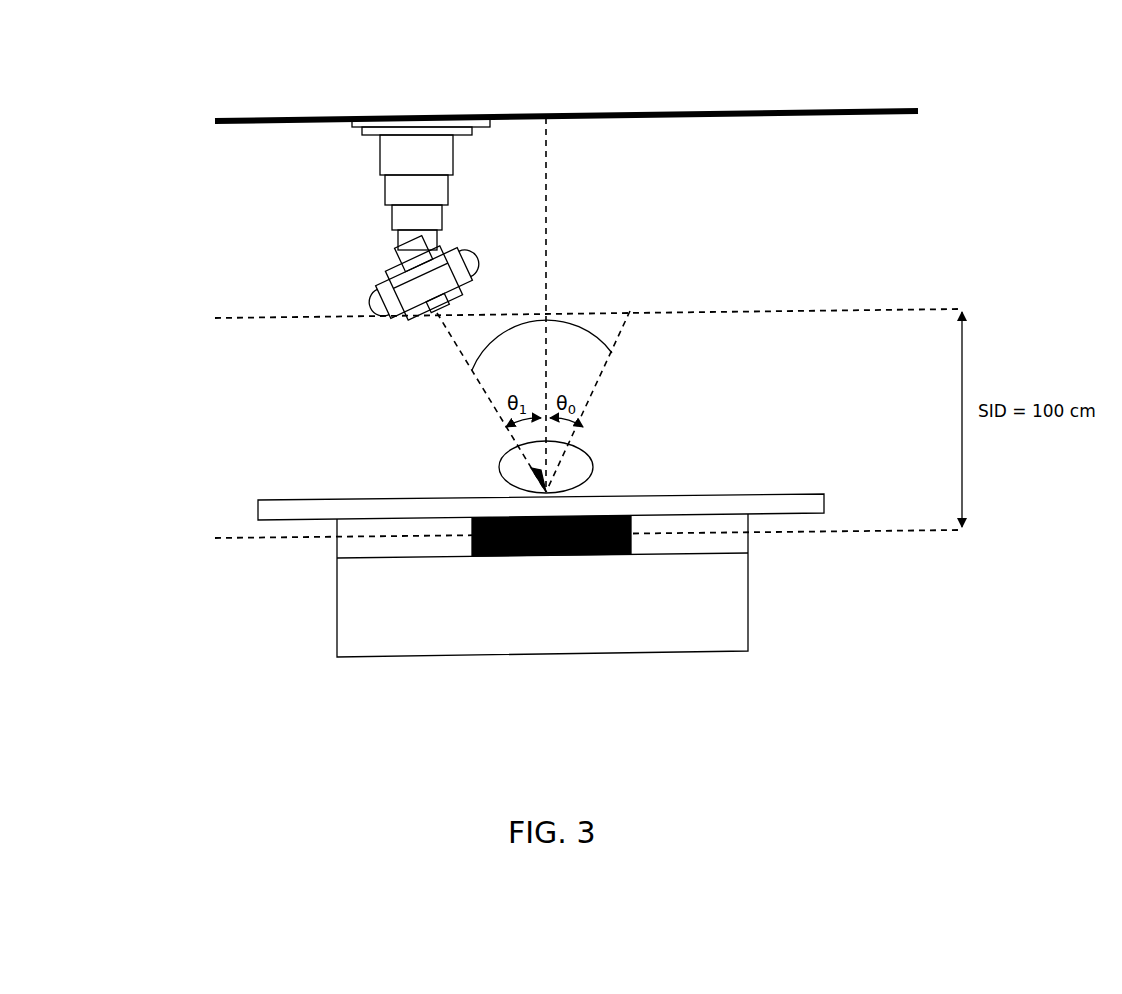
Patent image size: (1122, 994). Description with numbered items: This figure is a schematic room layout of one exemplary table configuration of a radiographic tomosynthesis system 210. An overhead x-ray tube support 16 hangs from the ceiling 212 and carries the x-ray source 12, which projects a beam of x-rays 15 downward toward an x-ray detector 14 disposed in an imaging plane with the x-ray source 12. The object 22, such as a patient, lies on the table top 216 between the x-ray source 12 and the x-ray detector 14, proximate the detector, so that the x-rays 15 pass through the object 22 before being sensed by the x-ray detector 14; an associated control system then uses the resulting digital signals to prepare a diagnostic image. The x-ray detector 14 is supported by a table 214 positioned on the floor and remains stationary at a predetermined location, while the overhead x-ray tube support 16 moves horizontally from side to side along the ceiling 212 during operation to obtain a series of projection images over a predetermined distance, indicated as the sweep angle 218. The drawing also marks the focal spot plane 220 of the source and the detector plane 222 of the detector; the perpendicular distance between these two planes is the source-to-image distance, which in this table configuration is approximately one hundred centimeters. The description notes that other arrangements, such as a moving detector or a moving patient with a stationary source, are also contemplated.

The radiographic tomosynthesis system 210 is at (684, 84).
The ceiling 212 is at (893, 108).
The overhead x-ray tube support 16 is at (382, 150).
The x-ray source 12 is at (368, 323).
The beam of x-rays 15 is at (447, 340).
The sweep angle 218 is at (587, 331).
The object 22 is at (592, 461).
The focal spot plane 220 is at (868, 308).
The detector plane 222 is at (895, 528).
The table top 216 is at (268, 508).
The table 214 is at (348, 637).
The x-ray detector 14 is at (595, 555).